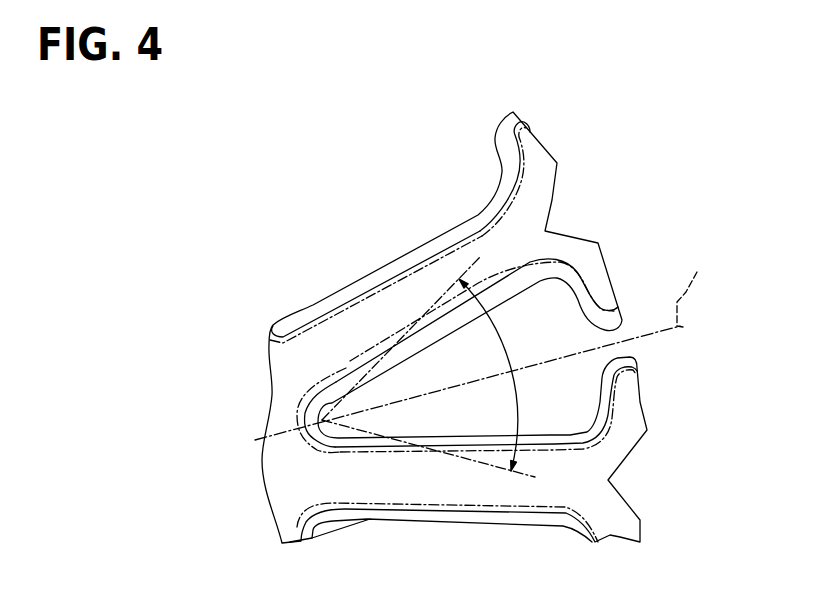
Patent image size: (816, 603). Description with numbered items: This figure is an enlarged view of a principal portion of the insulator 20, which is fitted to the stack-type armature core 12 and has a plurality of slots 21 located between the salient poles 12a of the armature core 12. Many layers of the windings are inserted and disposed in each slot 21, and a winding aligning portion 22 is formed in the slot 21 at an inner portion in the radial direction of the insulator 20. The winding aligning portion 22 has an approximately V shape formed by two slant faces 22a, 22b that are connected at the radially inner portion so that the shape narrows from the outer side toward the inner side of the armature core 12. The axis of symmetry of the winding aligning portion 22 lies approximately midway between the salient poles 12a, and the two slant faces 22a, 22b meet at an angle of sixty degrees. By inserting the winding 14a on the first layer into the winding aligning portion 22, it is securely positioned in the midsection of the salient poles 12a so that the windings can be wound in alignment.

The insulator 20 is at (390, 148).
The slot 21 is at (560, 386).
The armature core 12 is at (524, 167).
The salient pole 12a is at (359, 298).
The winding on the first layer 14a is at (313, 399).
The winding aligning portion 22 is at (447, 428).
The slant face 22a is at (322, 420).
The slant face 22b is at (322, 420).